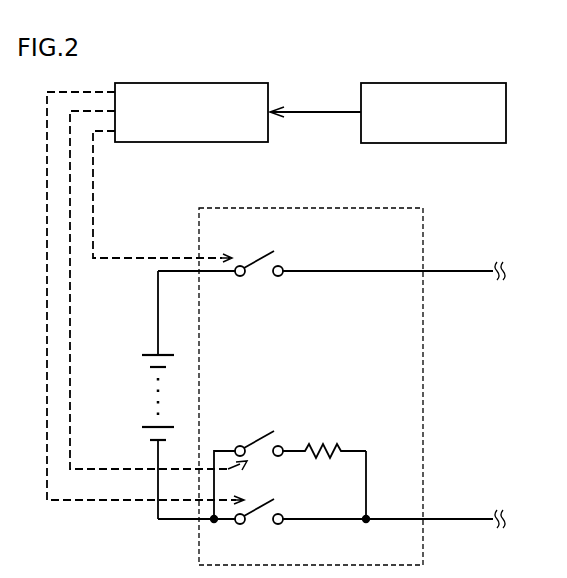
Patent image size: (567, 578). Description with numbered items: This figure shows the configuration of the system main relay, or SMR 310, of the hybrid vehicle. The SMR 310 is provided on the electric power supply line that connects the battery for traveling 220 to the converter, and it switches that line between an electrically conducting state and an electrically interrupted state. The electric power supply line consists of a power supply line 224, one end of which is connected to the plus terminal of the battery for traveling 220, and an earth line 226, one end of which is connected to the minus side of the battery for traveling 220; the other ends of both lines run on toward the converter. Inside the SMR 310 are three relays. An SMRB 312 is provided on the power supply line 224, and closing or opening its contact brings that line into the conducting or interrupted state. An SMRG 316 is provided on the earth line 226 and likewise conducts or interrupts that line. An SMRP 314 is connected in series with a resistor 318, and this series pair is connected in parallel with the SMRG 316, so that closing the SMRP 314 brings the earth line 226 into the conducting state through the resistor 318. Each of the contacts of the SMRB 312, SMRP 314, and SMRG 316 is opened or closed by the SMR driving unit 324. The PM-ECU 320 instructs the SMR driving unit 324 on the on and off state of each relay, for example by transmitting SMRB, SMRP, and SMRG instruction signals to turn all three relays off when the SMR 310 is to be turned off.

The battery for traveling 220 is at (145, 343).
The power supply line 224 is at (438, 270).
The earth line 226 is at (437, 521).
The system main relay 310 is at (372, 207).
The SMRB 312 is at (290, 257).
The SMRP 314 is at (288, 437).
The SMRG 316 is at (288, 505).
The resistor 318 is at (346, 443).
The PM-ECU 320 is at (428, 82).
The SMR driving unit 324 is at (185, 82).